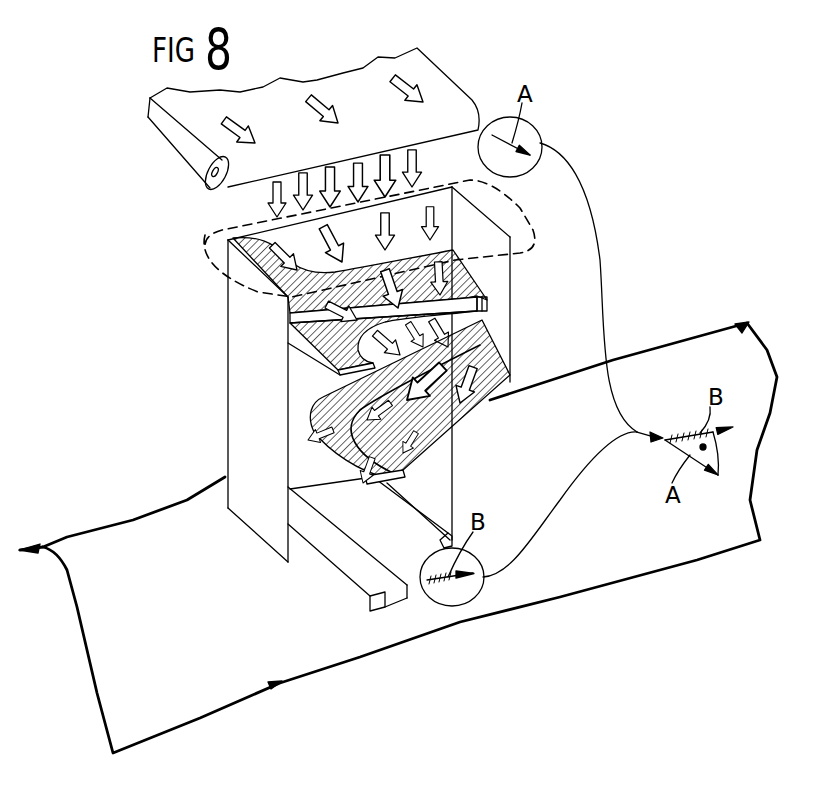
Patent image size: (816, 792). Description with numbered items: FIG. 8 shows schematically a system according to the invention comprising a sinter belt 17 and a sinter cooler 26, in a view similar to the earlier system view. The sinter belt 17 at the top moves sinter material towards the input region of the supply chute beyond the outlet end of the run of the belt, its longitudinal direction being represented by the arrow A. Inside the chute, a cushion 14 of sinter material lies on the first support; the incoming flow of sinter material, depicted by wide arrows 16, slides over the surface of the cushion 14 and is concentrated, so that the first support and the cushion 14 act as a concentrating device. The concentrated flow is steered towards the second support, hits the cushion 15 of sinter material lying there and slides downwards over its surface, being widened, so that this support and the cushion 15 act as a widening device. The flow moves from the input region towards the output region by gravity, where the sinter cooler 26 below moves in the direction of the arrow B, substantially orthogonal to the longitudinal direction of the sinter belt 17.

The cushion of sinter material 14 is at (228, 240).
The cushion of sinter material 15 is at (488, 406).
The wide arrows 16 is at (274, 193).
The sinter belt 17 is at (452, 83).
The sinter cooler 26 is at (290, 679).